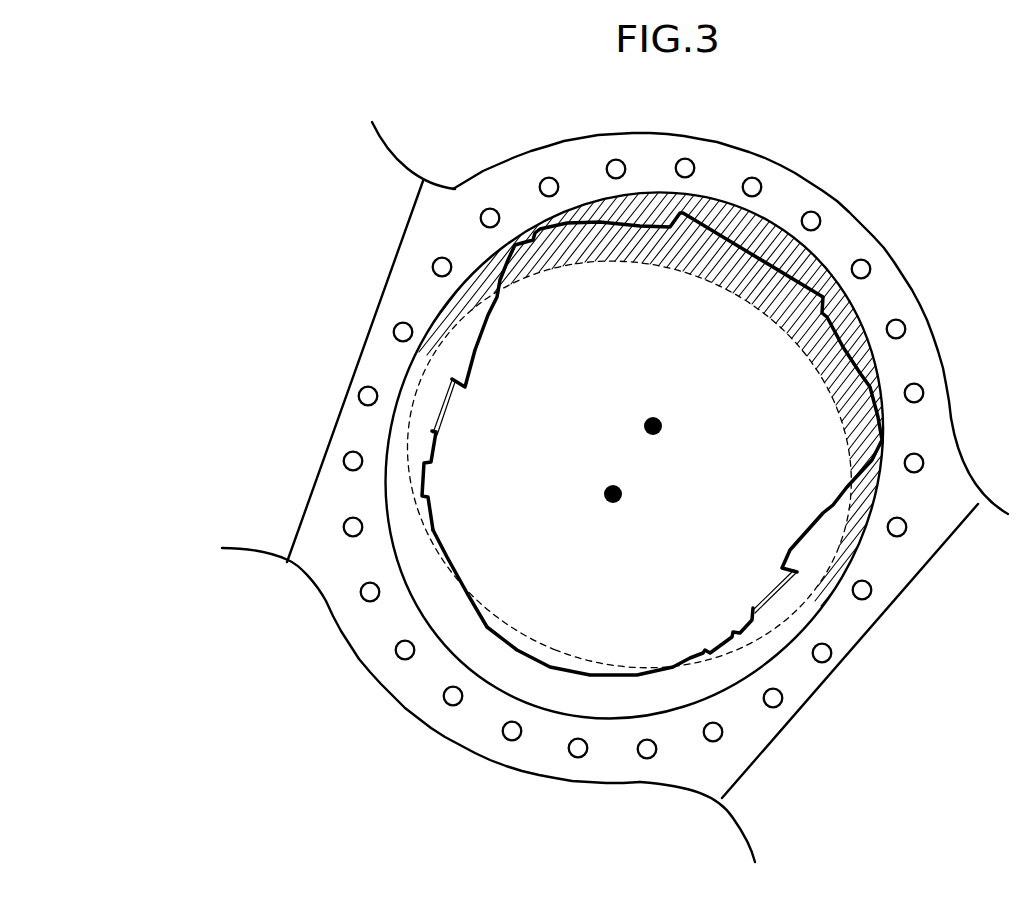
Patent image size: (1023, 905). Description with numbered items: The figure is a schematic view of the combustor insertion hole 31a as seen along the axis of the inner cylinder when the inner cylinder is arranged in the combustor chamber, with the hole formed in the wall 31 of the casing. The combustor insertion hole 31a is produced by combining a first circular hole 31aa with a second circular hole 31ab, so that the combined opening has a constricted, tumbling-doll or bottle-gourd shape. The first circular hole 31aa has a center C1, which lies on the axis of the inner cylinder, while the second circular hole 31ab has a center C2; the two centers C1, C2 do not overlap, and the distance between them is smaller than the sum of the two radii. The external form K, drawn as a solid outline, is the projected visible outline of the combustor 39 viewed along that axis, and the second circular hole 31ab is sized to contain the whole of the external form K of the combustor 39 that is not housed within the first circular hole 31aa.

The cylinder block / bore flange 31 is at (473, 184).
The combustor insertion hole 31a is at (567, 455).
The second circular hole 31ab is at (455, 298).
The first circular hole 31aa is at (380, 452).
The external form K is at (765, 258).
The combustor 39 is at (492, 630).
The center of the first circular hole C1 is at (613, 503).
The center of the second circular hole C2 is at (654, 435).